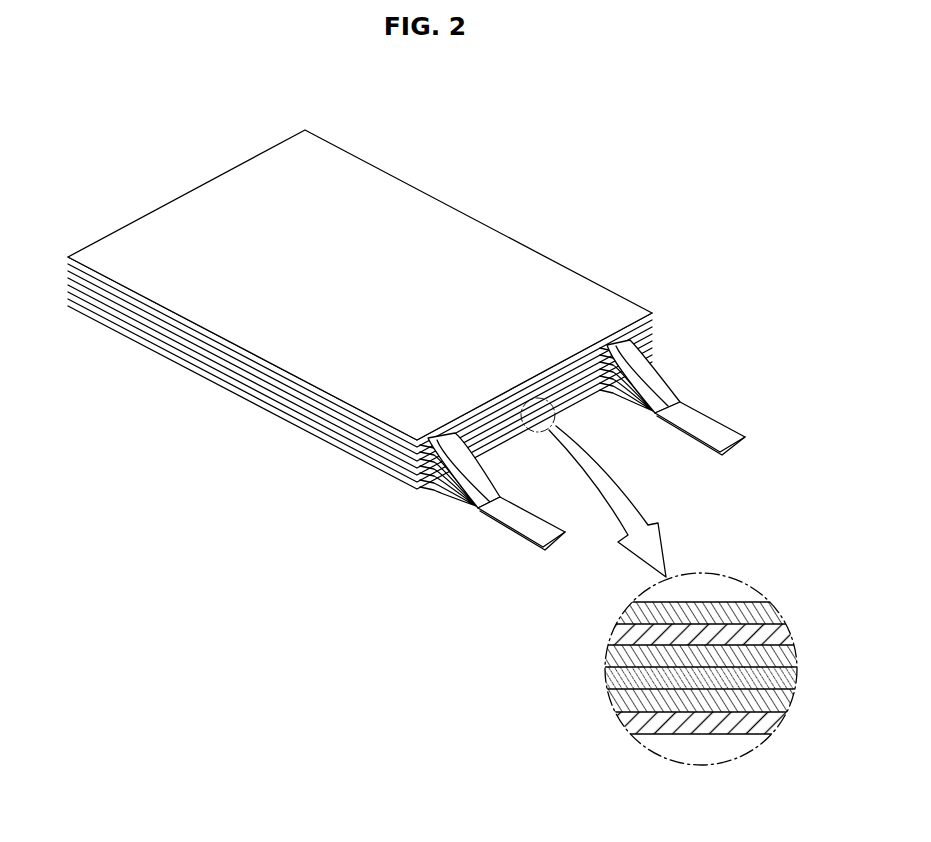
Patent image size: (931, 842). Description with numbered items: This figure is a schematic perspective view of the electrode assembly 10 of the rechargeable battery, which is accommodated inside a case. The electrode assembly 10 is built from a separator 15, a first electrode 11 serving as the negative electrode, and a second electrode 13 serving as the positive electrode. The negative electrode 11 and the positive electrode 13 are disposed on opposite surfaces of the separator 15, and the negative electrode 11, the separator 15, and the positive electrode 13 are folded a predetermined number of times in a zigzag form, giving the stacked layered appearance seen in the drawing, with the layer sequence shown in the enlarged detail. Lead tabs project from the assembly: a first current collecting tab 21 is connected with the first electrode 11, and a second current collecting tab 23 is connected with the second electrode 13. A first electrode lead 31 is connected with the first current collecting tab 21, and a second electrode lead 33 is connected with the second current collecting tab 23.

The electrode assembly 10 is at (552, 193).
The first electrode 11 is at (612, 637).
The second electrode 13 is at (605, 682).
The separator 15 is at (403, 190).
The first current collecting tab 21 is at (470, 482).
The second current collecting tab 23 is at (655, 373).
The first electrode lead 31 is at (533, 538).
The second electrode lead 33 is at (717, 435).